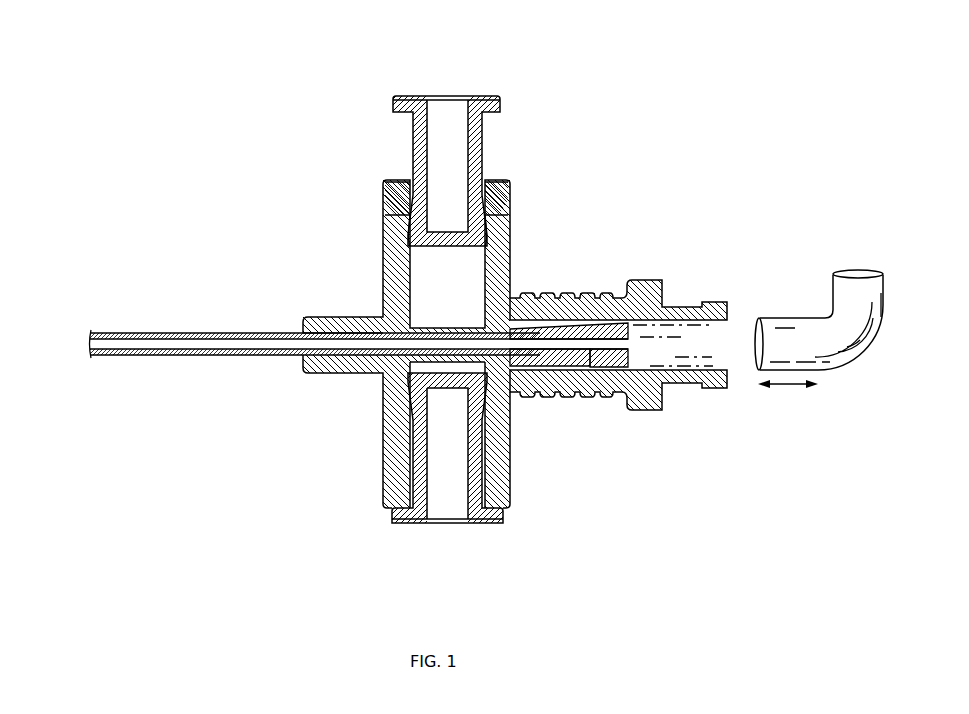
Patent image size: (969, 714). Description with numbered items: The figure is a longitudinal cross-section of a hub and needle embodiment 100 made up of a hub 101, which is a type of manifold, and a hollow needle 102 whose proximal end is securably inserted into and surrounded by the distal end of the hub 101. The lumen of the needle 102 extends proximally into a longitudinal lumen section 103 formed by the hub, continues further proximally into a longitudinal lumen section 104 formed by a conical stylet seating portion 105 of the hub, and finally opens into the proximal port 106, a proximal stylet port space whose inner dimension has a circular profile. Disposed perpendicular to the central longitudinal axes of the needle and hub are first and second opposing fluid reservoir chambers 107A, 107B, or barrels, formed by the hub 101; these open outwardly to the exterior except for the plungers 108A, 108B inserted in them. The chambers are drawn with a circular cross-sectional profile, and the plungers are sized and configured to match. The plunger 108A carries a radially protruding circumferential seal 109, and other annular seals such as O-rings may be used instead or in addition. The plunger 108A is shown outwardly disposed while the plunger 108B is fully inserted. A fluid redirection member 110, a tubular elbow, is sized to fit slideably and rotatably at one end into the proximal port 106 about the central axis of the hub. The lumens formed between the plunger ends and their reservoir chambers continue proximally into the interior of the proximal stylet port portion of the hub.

The hub and needle embodiment 100 is at (251, 30).
The hub 101 is at (657, 410).
The hollow needle 102 is at (177, 352).
The longitudinal lumen section 103 is at (465, 345).
The longitudinal lumen section 104 is at (555, 347).
The conical stylet seating portion 105 is at (608, 363).
The proximal port 106 is at (718, 349).
The first fluid reservoir chamber 107A is at (357, 186).
The second fluid reservoir chamber 107B is at (357, 381).
The plunger 108A is at (498, 104).
The plunger 108B is at (487, 522).
The radially protruding circumferential seal 109 is at (392, 196).
The fluid redirection member 110 is at (877, 340).